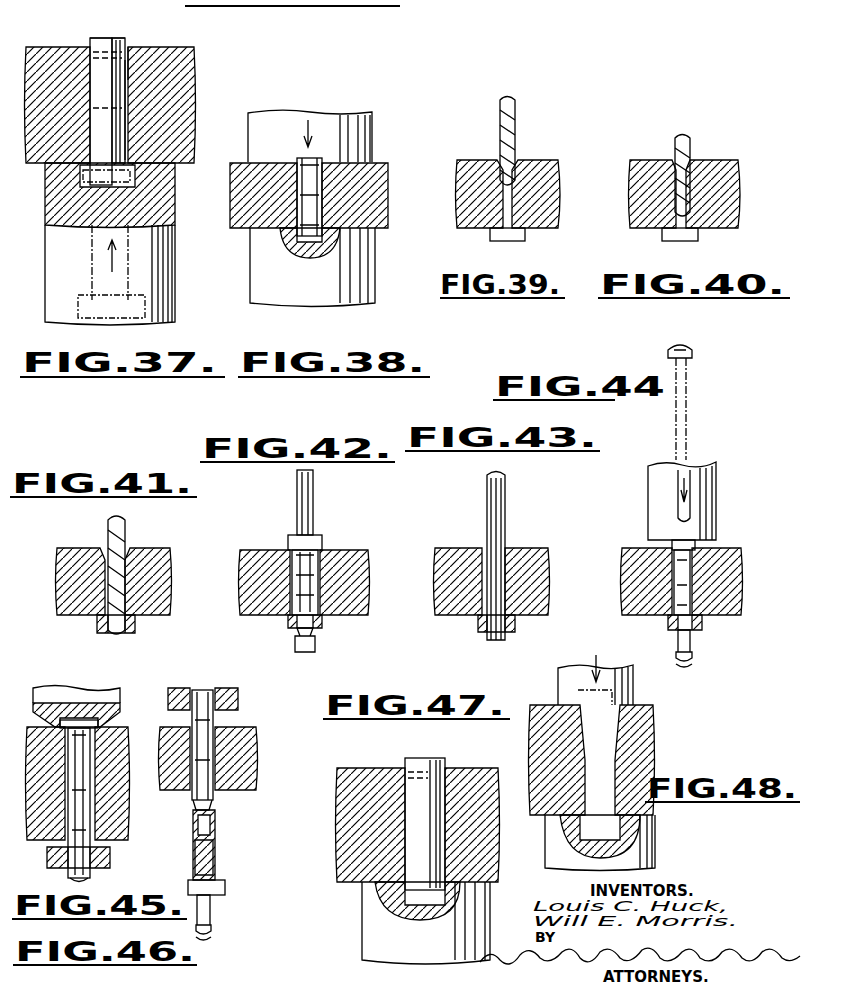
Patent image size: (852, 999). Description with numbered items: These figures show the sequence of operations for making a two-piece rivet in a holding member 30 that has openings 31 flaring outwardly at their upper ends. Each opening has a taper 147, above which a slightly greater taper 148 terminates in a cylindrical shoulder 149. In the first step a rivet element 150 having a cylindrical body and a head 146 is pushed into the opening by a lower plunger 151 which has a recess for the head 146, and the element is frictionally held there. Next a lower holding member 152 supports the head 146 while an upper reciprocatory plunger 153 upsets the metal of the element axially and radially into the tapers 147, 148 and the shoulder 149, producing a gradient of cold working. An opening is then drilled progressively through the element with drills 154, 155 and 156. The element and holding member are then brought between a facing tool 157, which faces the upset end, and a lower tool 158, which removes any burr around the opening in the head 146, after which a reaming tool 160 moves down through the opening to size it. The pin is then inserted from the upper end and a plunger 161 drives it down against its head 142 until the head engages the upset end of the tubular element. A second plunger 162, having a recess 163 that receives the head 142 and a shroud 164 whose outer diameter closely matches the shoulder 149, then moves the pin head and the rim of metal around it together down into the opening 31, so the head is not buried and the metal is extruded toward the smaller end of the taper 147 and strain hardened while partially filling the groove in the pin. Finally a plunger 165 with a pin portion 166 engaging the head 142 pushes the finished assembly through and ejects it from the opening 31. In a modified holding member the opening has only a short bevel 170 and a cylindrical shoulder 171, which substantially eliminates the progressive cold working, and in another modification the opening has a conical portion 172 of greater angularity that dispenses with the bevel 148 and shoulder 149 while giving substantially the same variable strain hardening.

In FIG. 37, the holding member 30 is at (182, 50).
In FIG. 38, the holding member 30 is at (385, 165).
In FIG. 39, the holding member 30 is at (548, 162).
In FIG. 40, the holding member 30 is at (735, 162).
In FIG. 41, the holding member 30 is at (152, 552).
In FIG. 42, the holding member 30 is at (345, 552).
In FIG. 43, the holding member 30 is at (540, 553).
In FIG. 44, the holding member 30 is at (743, 610).
In FIG. 45, the holding member 30 is at (78, 797).
In FIG. 46, the holding member 30 is at (208, 758).
In FIG. 47, the holding member 30 is at (426, 923).
In FIG. 48, the holding member 30 is at (600, 763).
In FIG. 37, the opening 31 is at (118, 133).
In FIG. 44, the head 142 is at (700, 545).
In FIG. 45, the head 142 is at (70, 688).
In FIG. 37, the head 146 is at (133, 167).
In FIG. 38, the head 146 is at (373, 218).
In FIG. 42, the head 146 is at (322, 622).
In FIG. 37, the taper 147 is at (130, 72).
In FIG. 37, the taper 148 is at (143, 50).
In FIG. 37, the cylindrical shoulder 149 is at (133, 50).
In FIG. 37, the rivet element 150 is at (118, 115).
In FIG. 37, the lower plunger 151 is at (163, 240).
In FIG. 38, the lower holding member 152 is at (362, 257).
In FIG. 38, the upper reciprocatory plunger 153 is at (365, 122).
In FIG. 39, the drill 154 is at (512, 98).
In FIG. 40, the drill 155 is at (690, 150).
In FIG. 41, the drill 156 is at (122, 530).
In FIG. 42, the facing tool 157 is at (313, 512).
In FIG. 42, the lower tool 158 is at (315, 645).
In FIG. 43, the reaming tool 160 is at (500, 510).
In FIG. 44, the plunger 161 is at (713, 490).
In FIG. 45, the second plunger 162 is at (110, 688).
In FIG. 45, the recess 163 is at (100, 722).
In FIG. 45, the shroud 164 is at (105, 738).
In FIG. 46, the plunger 165 is at (237, 697).
In FIG. 46, the pin portion 166 is at (215, 713).
In FIG. 47, the short bevel 170 is at (455, 765).
In FIG. 47, the cylindrical shoulder 171 is at (405, 765).
In FIG. 48, the conical portion 172 is at (622, 742).